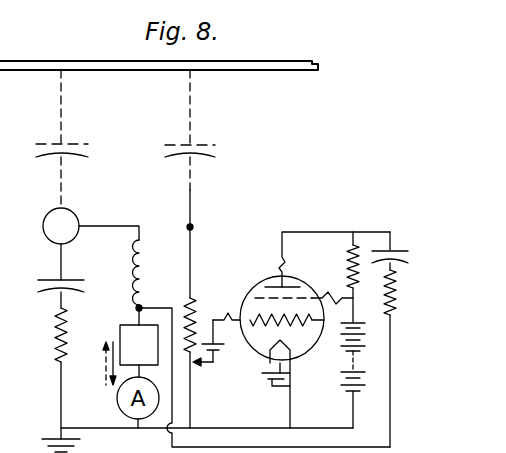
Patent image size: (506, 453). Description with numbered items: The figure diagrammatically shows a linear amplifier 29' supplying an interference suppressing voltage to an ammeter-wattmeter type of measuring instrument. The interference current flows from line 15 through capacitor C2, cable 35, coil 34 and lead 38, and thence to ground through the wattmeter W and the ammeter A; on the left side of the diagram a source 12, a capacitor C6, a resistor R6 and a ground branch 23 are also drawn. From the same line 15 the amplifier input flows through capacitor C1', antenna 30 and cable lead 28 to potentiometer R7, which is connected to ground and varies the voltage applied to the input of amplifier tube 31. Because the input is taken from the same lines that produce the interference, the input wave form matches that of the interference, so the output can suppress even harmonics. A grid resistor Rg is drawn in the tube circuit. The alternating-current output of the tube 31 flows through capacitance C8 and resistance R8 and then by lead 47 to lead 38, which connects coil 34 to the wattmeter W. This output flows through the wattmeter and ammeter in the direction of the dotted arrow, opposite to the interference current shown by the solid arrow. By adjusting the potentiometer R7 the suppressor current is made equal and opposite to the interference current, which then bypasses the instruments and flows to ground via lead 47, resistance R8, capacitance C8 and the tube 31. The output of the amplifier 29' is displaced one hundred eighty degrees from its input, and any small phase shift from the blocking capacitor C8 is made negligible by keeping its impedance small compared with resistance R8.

The line 15 is at (110, 63).
The capacitor C2 is at (85, 150).
The capacitor C1' is at (213, 130).
The source / generator 12 is at (51, 219).
The cable 35 is at (104, 226).
The antenna 30 is at (192, 200).
The cable lead 28 is at (192, 248).
The coil 34 is at (143, 256).
The lead 47 is at (171, 308).
The lead 38 is at (136, 320).
The capacitor C6 is at (70, 288).
The resistor R6 is at (66, 347).
The ground connection / branch 23 is at (45, 341).
The potentiometer R7 is at (195, 382).
The amplifier tube 31 is at (301, 294).
The linear amplifier 29' is at (350, 223).
The grid resistor Rg is at (352, 252).
The capacitance C8 is at (396, 257).
The resistance R8 is at (394, 292).